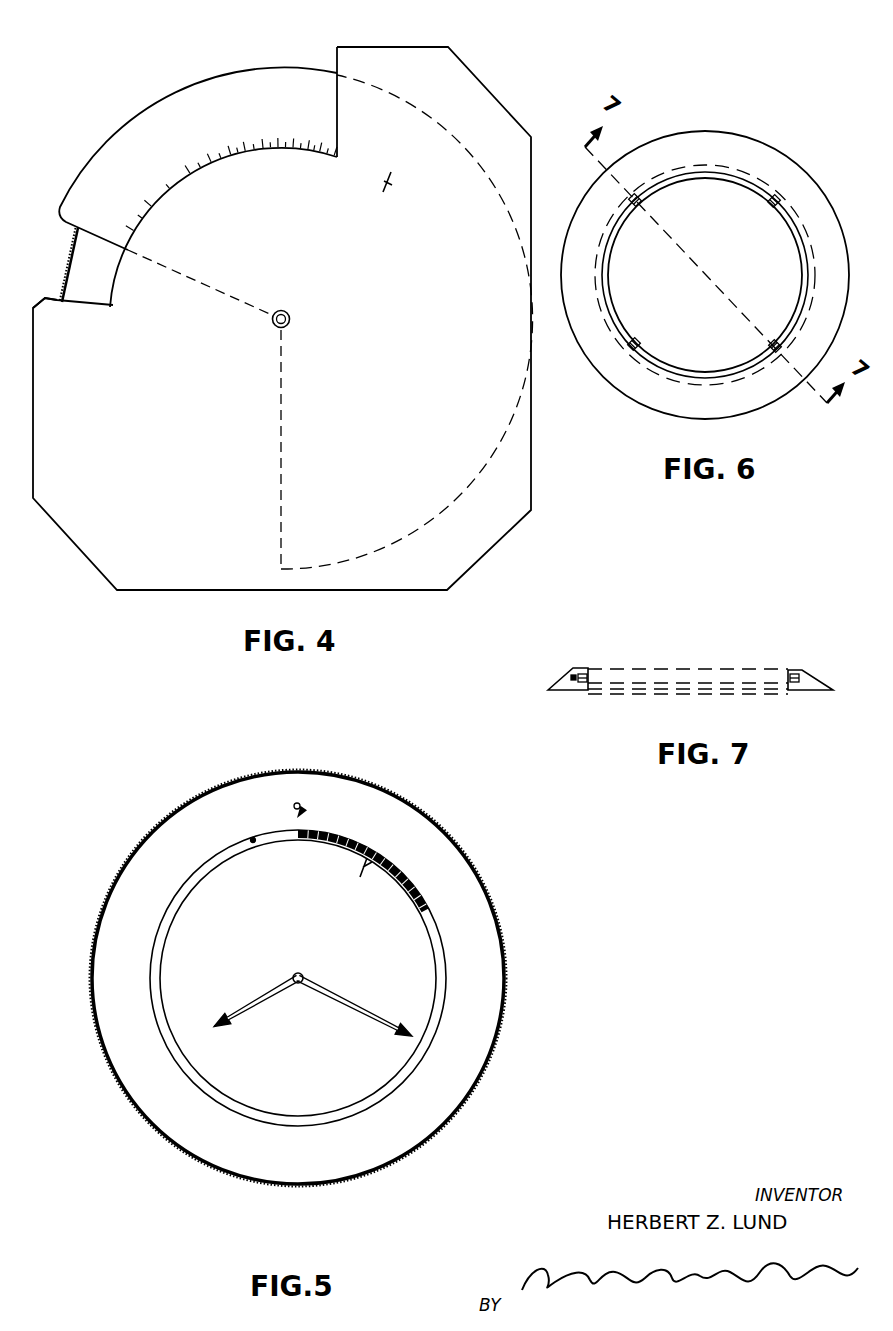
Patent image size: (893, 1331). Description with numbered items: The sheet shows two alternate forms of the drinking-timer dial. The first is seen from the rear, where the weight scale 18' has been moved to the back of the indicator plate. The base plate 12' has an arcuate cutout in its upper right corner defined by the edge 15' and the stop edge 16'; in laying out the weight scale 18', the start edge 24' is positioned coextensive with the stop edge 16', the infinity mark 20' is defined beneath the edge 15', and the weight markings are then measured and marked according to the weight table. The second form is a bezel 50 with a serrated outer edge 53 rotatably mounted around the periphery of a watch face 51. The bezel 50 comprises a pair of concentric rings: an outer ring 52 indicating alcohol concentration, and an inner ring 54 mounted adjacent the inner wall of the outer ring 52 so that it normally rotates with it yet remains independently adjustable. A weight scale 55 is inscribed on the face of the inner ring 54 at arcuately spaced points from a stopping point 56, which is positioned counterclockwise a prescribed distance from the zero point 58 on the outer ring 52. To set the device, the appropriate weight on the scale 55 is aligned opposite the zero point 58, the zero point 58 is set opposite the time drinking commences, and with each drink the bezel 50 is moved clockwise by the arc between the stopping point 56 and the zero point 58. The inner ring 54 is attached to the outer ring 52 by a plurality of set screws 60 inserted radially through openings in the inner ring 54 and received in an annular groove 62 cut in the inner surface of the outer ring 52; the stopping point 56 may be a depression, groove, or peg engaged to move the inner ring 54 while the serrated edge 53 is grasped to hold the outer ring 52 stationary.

In FIG. 4, the base plate 12' is at (283, 318).
In FIG. 4, the edge 15' is at (310, 89).
In FIG. 4, the stop edge 16' is at (39, 290).
In FIG. 4, the weight scale 18' is at (186, 158).
In FIG. 4, the infinity mark 20' is at (416, 184).
In FIG. 4, the start edge 24' is at (56, 263).
In FIG. 5, the bezel 50 is at (497, 917).
In FIG. 5, the watch face 51 is at (268, 958).
In FIG. 6, the outer ring 52 is at (602, 203).
In FIG. 7, the outer ring 52 is at (560, 684).
In FIG. 5, the outer ring 52 is at (445, 865).
In FIG. 5, the serrated outer edge 53 is at (400, 797).
In FIG. 6, the inner ring 54 is at (722, 178).
In FIG. 7, the inner ring 54 is at (589, 675).
In FIG. 5, the inner ring 54 is at (428, 923).
In FIG. 5, the weight scale 55 is at (364, 869).
In FIG. 5, the stopping point 56 is at (253, 843).
In FIG. 5, the zero point 58 is at (300, 813).
In FIG. 6, the set screws 60 is at (637, 196).
In FIG. 7, the set screws 60 is at (586, 672).
In FIG. 6, the annular groove 62 is at (692, 168).
In FIG. 7, the annular groove 62 is at (573, 674).